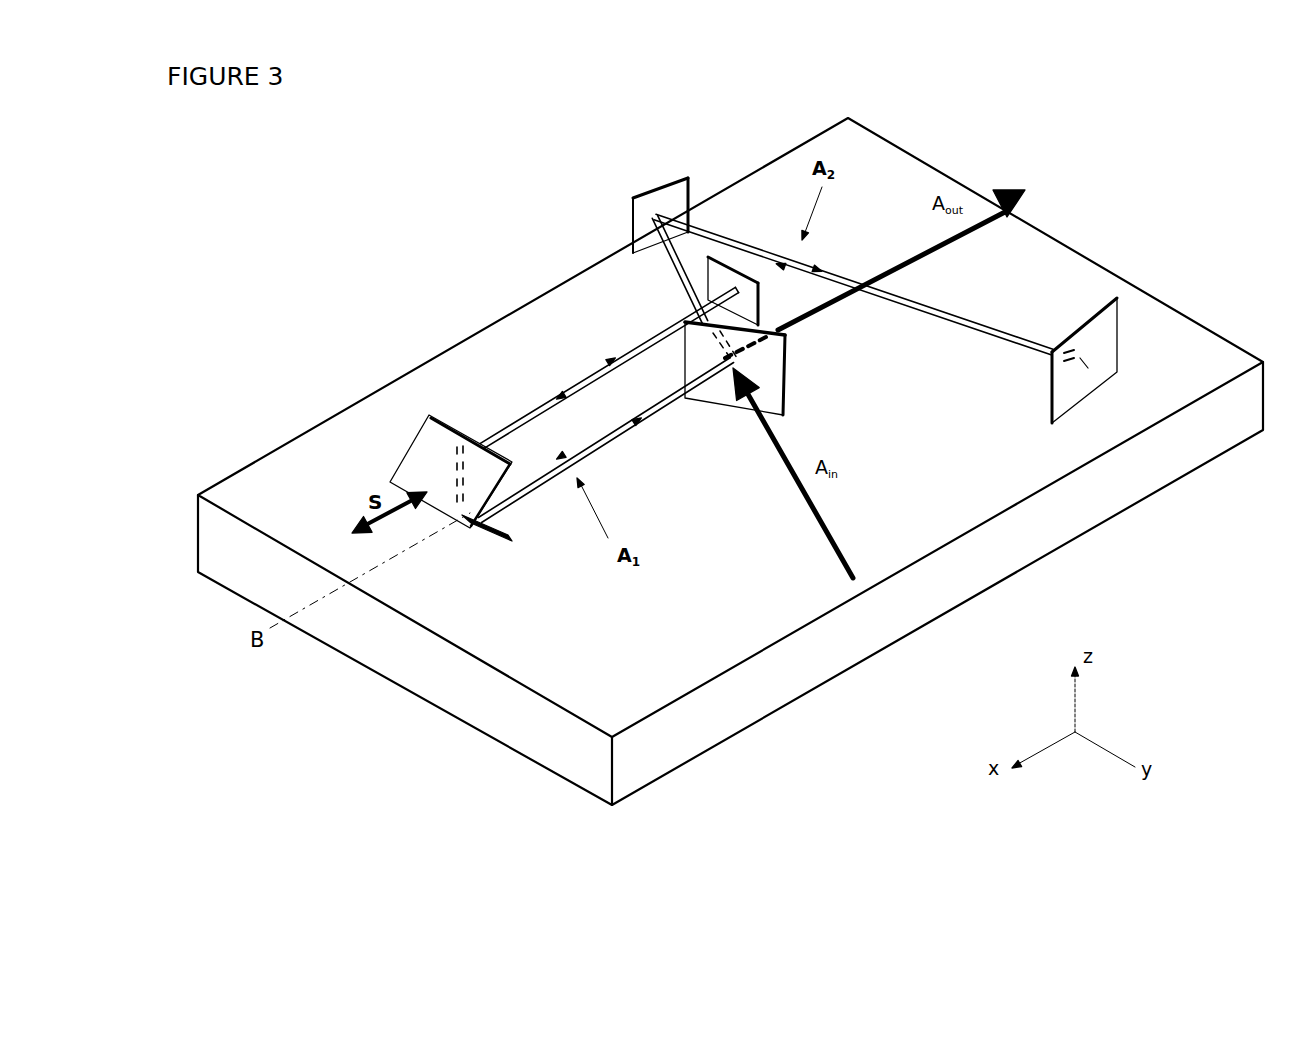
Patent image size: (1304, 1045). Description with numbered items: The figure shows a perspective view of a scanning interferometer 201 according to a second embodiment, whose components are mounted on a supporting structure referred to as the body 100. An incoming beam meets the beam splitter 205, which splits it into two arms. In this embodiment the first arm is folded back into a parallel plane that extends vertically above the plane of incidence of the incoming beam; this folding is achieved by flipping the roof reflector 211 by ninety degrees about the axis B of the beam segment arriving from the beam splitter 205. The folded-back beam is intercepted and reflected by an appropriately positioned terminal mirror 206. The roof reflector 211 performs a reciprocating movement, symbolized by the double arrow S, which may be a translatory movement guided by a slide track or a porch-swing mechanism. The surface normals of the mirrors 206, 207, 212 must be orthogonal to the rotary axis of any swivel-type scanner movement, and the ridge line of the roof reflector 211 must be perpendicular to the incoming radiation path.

The body 100 is at (388, 655).
The interferometer 201 is at (1107, 175).
The beam splitter 205 is at (725, 405).
The terminal mirror 206 is at (735, 275).
The mirror 207 is at (1052, 397).
The roof reflector 211 is at (410, 448).
The mirror 212 is at (630, 242).